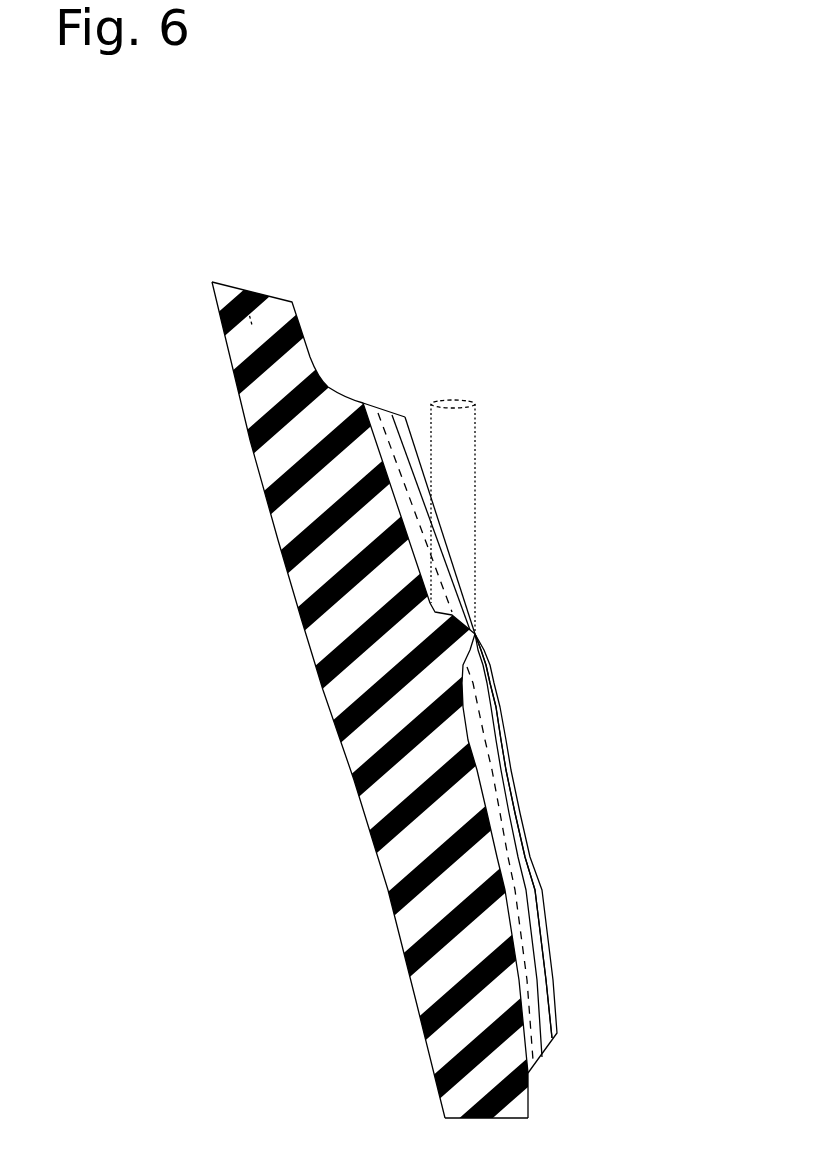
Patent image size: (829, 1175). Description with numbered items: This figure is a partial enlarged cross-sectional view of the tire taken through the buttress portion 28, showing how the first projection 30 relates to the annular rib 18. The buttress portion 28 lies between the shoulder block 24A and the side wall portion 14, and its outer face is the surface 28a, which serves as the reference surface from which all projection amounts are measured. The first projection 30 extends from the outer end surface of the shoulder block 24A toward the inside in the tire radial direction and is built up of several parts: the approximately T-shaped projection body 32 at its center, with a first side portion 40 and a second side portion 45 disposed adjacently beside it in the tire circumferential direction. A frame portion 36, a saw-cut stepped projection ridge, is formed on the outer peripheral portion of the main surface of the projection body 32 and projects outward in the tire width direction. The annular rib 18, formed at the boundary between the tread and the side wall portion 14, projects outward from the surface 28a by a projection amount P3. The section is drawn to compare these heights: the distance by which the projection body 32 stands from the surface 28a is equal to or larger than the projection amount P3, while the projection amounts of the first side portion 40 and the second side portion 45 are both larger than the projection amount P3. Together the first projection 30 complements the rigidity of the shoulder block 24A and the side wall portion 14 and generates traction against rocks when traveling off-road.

The shoulder block 24A is at (243, 289).
The buttress portion 28 is at (340, 693).
The surface 28a is at (497, 845).
The annular rib 18 is at (460, 640).
The first side portion 40 is at (495, 733).
The projection body 32 is at (515, 777).
The frame portion 36 is at (623, 765).
The second side portion 45 is at (512, 812).
The first projection 30 is at (552, 978).
The side wall portion 14 is at (520, 1107).
The projection amount P3 is at (453, 504).